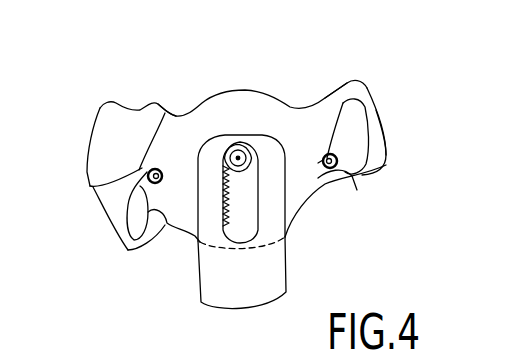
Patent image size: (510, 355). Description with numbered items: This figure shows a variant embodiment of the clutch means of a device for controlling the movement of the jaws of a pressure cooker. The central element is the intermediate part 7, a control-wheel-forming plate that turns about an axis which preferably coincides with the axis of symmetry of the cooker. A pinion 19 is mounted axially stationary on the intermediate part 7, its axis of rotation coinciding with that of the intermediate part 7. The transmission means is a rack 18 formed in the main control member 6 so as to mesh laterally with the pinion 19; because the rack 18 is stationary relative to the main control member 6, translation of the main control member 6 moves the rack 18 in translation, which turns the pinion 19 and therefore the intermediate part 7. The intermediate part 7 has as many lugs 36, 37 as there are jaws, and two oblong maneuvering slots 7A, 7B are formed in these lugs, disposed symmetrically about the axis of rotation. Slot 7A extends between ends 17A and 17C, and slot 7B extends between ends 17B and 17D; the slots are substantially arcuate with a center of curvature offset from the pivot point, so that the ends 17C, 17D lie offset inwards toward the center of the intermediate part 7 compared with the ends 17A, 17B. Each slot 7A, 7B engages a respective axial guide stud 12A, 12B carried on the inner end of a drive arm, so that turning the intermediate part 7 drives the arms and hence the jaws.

The main control member 6 is at (223, 288).
The intermediate part 7 is at (250, 102).
The oblong maneuvering slot 7A is at (363, 119).
The oblong maneuvering slot 7B is at (163, 233).
The axial guide stud 12A is at (339, 164).
The axial guide stud 12B is at (146, 172).
The end of maneuvering slot 17A is at (349, 85).
The end of maneuvering slot 17B is at (129, 250).
The end of maneuvering slot 17C is at (322, 184).
The end of maneuvering slot 17D is at (160, 172).
The rack 18 is at (238, 207).
The pinion 19 is at (239, 150).
The lug 36 is at (95, 204).
The lug 37 is at (388, 156).